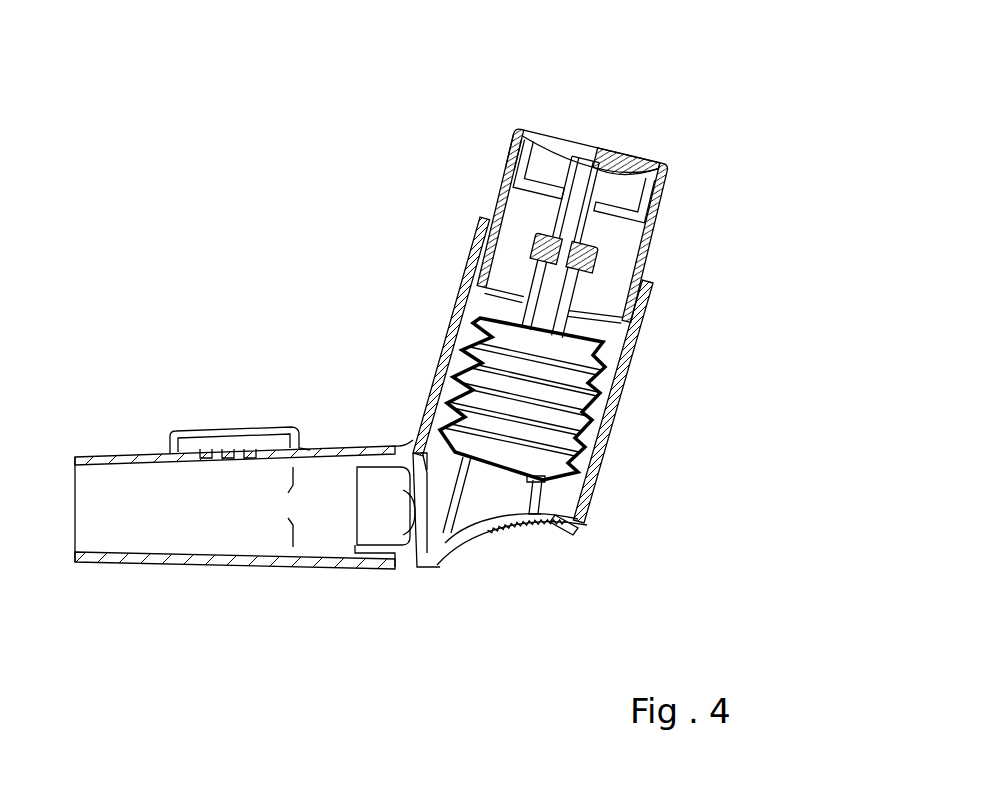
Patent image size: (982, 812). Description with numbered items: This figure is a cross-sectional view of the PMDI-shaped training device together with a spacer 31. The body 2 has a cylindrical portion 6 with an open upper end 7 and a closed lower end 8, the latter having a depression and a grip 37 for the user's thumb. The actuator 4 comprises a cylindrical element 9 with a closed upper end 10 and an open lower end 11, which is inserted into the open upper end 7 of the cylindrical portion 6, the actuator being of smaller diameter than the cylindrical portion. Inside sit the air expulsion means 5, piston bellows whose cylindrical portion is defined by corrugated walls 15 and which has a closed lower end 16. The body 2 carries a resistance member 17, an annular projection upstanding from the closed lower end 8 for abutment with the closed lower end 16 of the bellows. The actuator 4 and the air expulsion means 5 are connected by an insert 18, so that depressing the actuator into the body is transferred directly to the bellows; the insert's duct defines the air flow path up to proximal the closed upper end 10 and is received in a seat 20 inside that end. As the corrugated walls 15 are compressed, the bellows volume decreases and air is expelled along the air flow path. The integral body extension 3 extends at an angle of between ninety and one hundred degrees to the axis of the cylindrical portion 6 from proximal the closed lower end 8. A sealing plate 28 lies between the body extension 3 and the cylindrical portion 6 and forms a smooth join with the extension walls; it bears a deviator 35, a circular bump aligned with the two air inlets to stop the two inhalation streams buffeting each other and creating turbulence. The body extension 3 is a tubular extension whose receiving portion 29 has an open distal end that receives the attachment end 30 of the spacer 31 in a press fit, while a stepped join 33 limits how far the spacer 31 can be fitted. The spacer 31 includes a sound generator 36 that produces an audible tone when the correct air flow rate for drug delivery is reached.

The body 2 is at (655, 362).
The body extension 3 is at (404, 580).
The actuator 4 is at (700, 180).
The air expulsion means 5 is at (577, 393).
The cylindrical portion 6 is at (450, 340).
The open upper end 7 is at (650, 283).
The closed lower end 8 is at (542, 522).
The cylindrical element 9 is at (512, 163).
The closed upper end 10 is at (560, 162).
The open lower end 11 is at (478, 298).
The corrugated walls 15 is at (592, 437).
The closed lower end 16 is at (540, 473).
The resistance member 17 is at (543, 510).
The insert 18 is at (545, 212).
The seat 20 is at (608, 171).
The sealing plate 28 is at (427, 550).
The receiving portion 29 is at (385, 542).
The attachment end 30 is at (398, 443).
The spacer 31 is at (128, 557).
The stepped join 33 is at (408, 443).
The deviator 35 is at (410, 503).
The sound generator 36 is at (208, 440).
The grip 37 is at (493, 527).